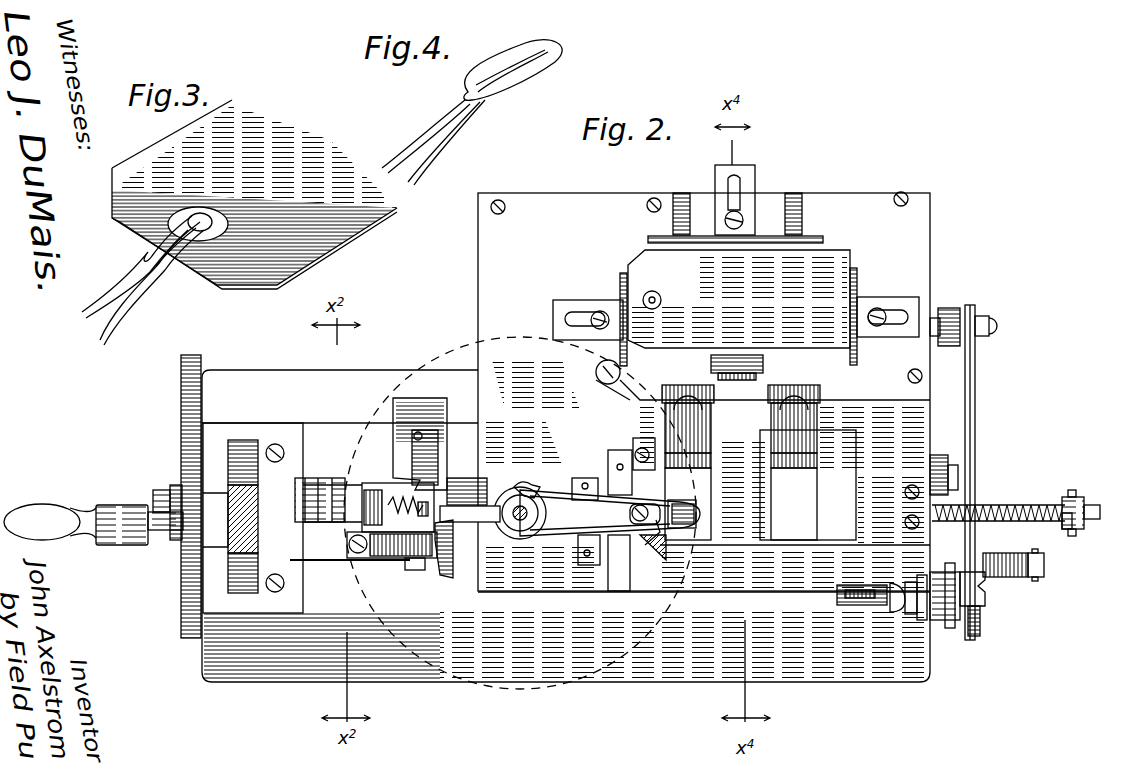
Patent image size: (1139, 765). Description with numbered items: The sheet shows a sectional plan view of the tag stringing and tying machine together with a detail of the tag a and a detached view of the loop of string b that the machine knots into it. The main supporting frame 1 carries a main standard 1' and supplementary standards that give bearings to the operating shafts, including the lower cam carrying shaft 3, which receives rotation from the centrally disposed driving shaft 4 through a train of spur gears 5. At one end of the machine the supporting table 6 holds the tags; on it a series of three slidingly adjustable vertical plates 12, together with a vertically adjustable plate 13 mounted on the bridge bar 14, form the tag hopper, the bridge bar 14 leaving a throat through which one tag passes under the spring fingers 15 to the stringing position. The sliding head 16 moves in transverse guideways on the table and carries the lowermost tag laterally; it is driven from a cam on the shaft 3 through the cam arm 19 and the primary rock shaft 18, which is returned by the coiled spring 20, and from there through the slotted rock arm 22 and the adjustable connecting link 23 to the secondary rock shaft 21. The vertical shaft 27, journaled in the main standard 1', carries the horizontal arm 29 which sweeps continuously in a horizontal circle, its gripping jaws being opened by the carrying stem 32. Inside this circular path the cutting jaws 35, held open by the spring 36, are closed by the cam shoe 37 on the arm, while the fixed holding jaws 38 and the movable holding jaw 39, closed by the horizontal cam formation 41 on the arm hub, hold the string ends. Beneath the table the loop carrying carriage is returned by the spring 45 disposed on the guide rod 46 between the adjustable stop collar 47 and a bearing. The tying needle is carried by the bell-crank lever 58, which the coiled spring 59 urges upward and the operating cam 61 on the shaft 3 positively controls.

In FIG. 3, the shipping tag a is at (125, 192).
In FIG. 4, the loop of string b is at (555, 62).
In FIG. 2, the main supporting frame 1 is at (566, 546).
In FIG. 2, the main standard 1' is at (253, 518).
In FIG. 2, the lower cam carrying shaft 3 is at (470, 478).
In FIG. 2, the driving shaft 4 is at (160, 530).
In FIG. 2, the spur gears 5 is at (181, 578).
In FIG. 2, the supporting plate or table 6 is at (478, 288).
In FIG. 2, the vertical hopper plates 12 is at (620, 283).
In FIG. 2, the vertically adjustable hopper plate 13 is at (752, 362).
In FIG. 2, the bridge bar 14 is at (624, 388).
In FIG. 2, the spring fingers 15 is at (771, 488).
In FIG. 2, the sliding head 16 is at (673, 219).
In FIG. 2, the primary rock shaft 18 is at (1044, 565).
In FIG. 2, the cam arm 19 is at (928, 622).
In FIG. 2, the coiled spring 20 is at (1002, 578).
In FIG. 2, the secondary rock shaft 21 is at (986, 315).
In FIG. 2, the slotted rock arm 22 is at (950, 310).
In FIG. 2, the adjustable connecting link 23 is at (985, 472).
In FIG. 2, the vertical shaft 27 is at (530, 513).
In FIG. 2, the horizontal arm 29 is at (566, 545).
In FIG. 2, the carrying stem 32 is at (700, 512).
In FIG. 2, the cutting jaws 35 is at (396, 507).
In FIG. 2, the spring 36 is at (388, 560).
In FIG. 2, the cam shoe 37 is at (668, 550).
In FIG. 2, the fixed holding jaws 38 is at (612, 600).
In FIG. 2, the movable holding jaw 39 is at (606, 462).
In FIG. 2, the horizontal cam formation 41 is at (526, 487).
In FIG. 2, the spring 45 is at (997, 488).
In FIG. 2, the guide rod 46 is at (1084, 500).
In FIG. 2, the adjustable stop collar 47 is at (1064, 516).
In FIG. 2, the bell-crank lever 58 is at (470, 517).
In FIG. 2, the coiled spring 59 is at (412, 450).
In FIG. 2, the operating cam 61 is at (447, 422).